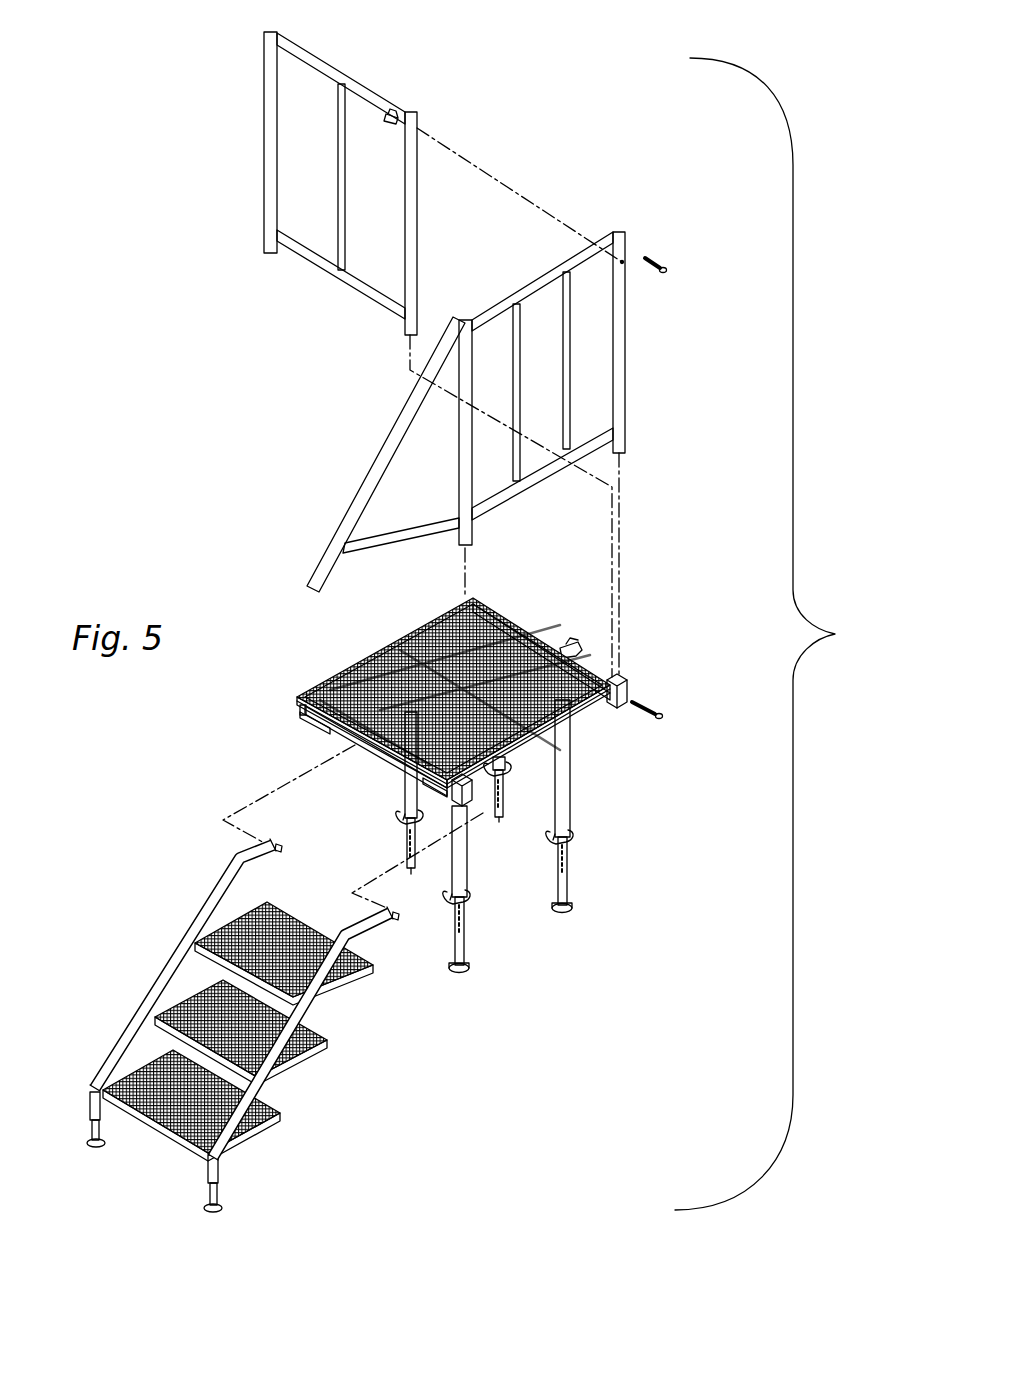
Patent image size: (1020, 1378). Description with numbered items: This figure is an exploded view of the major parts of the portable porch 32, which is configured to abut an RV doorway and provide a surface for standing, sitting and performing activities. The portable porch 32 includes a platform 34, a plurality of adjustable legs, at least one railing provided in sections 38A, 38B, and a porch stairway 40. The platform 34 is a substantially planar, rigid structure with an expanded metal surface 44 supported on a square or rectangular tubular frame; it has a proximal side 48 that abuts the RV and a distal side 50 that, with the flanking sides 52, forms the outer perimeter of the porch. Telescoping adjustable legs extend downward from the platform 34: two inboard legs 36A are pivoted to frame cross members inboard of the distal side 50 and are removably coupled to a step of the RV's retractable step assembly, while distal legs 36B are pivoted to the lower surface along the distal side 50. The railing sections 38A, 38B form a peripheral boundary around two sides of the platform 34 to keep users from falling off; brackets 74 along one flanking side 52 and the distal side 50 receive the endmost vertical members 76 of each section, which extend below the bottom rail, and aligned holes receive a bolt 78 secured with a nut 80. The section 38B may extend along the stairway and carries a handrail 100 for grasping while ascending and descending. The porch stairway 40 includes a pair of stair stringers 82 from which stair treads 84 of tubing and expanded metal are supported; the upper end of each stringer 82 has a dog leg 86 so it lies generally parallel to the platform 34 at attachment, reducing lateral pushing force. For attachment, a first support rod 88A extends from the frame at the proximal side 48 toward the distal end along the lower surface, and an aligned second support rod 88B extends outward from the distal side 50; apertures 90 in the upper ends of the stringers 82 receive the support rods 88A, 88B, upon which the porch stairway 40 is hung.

The portable porch 32 is at (835, 634).
The platform 34 is at (397, 772).
The inboard adjustable legs 36A is at (405, 802).
The distal adjustable legs 36B is at (570, 782).
The railing side section 38A is at (374, 86).
The railing section with handrail 38B is at (522, 412).
The porch stairway 40 is at (230, 1025).
The expanded metal surface 44 is at (408, 632).
The proximal side 48 is at (296, 711).
The distal side 50 is at (578, 712).
The flanking sides 52 is at (540, 640).
The brackets 74 is at (620, 678).
The endmost vertical members 76 is at (263, 128).
The bolt 78 is at (668, 262).
The nut 80 is at (390, 124).
The stair stringers 82 is at (200, 900).
The stair treads 84 is at (178, 1050).
The dog leg 86 is at (262, 862).
The first support rod 88A is at (318, 726).
The second support rod 88B is at (440, 820).
The apertures 90 is at (282, 848).
The handrail 100 is at (378, 448).